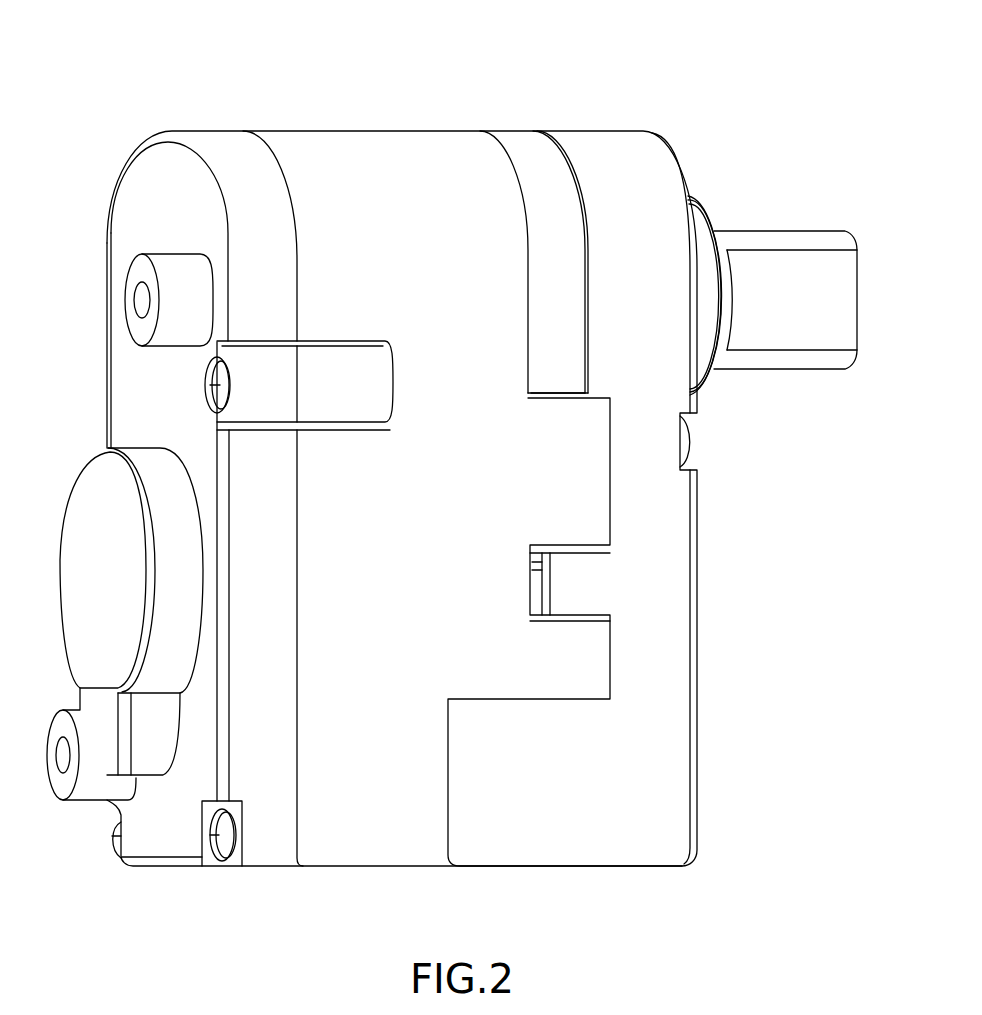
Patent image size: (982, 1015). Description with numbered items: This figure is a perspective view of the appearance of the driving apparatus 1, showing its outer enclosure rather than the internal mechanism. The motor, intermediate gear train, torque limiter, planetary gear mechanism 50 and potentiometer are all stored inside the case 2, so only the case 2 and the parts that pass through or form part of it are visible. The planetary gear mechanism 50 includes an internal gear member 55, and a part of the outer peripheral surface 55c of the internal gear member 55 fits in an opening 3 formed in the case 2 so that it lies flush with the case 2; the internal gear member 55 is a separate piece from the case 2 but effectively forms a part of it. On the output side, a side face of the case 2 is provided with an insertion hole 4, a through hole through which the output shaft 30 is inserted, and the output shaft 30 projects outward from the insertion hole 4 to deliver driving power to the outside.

The driving apparatus 1 is at (662, 100).
The case 2 is at (370, 853).
The opening 3 is at (555, 165).
The insertion hole 4 is at (690, 210).
The output shaft 30 is at (815, 200).
The planetary gear mechanism 50 is at (490, 120).
The internal gear member 55 is at (558, 200).
The outer peripheral surface 55c is at (557, 358).